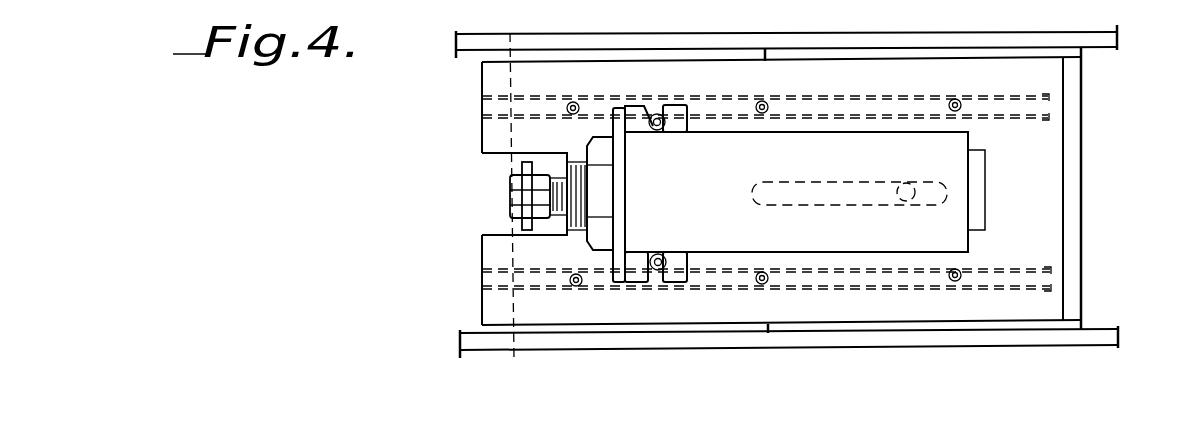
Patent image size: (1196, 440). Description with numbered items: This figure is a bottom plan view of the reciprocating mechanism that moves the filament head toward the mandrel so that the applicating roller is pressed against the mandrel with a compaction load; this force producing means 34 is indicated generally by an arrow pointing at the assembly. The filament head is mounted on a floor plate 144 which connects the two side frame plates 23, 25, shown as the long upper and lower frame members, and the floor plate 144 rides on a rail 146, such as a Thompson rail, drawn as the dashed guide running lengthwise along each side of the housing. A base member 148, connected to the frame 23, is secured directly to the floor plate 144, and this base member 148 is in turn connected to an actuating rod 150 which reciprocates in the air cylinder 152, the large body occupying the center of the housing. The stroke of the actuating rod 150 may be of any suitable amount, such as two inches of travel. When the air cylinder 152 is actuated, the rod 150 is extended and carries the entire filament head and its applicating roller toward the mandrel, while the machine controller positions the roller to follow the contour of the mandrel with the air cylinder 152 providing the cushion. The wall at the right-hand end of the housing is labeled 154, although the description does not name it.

The side frame plate 23 is at (627, 42).
The side frame plate 25 is at (557, 340).
The force producing means 34 is at (417, 229).
The floor plate 144 is at (548, 228).
The rail 146 is at (482, 116).
The base member 148 is at (512, 221).
The actuating rod 150 is at (510, 170).
The air cylinder 152 is at (880, 240).
The housing side wall 154 is at (1052, 143).